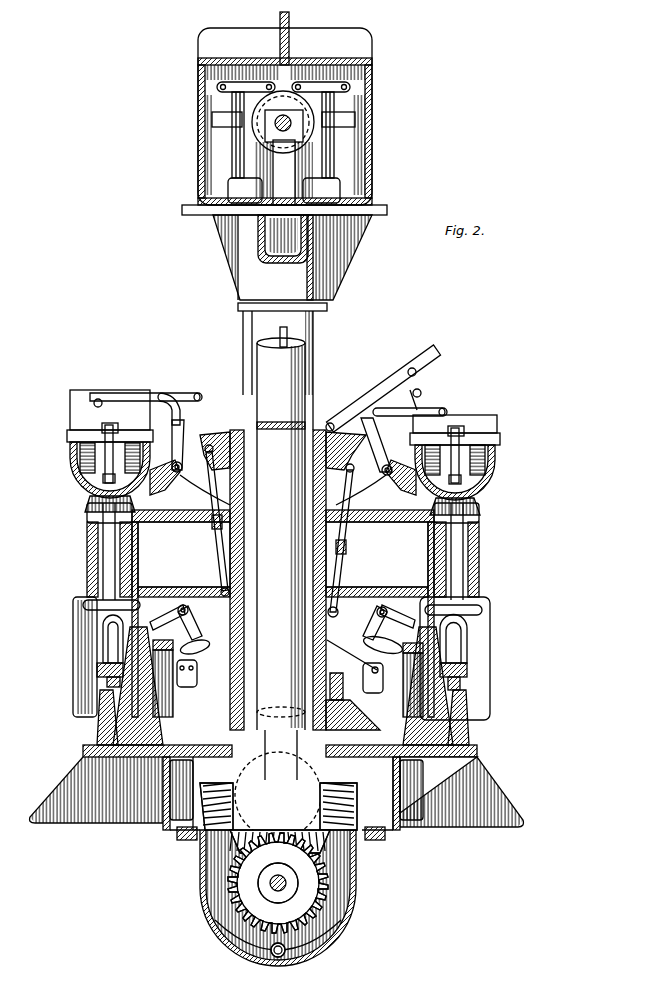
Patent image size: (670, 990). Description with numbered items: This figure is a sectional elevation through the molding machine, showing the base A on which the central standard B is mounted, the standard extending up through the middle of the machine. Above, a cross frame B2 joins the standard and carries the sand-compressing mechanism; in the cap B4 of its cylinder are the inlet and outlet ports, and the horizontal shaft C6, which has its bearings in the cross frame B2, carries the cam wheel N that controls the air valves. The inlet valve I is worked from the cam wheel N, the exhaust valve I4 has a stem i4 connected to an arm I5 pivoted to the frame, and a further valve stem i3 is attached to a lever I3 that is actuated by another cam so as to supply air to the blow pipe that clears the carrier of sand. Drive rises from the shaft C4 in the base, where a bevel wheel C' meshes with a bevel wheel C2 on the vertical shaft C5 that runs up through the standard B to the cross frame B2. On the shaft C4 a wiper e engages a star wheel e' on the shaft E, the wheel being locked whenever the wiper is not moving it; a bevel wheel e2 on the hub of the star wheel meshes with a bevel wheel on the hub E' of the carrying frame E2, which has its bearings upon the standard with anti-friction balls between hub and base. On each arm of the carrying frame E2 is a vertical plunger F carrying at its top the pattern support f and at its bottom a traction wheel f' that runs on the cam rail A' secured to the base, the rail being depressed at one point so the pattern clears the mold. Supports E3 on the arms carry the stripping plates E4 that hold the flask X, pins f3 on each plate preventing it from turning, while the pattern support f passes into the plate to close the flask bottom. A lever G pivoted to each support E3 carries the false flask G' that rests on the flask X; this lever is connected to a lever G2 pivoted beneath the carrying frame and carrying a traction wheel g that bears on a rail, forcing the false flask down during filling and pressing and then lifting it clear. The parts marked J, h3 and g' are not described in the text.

The inlet valve I is at (357, 176).
The arm I5 is at (244, 82).
The lever I3 is at (325, 82).
The cam wheel N is at (255, 132).
The horizontal shaft C6 is at (283, 132).
The stem i4 is at (238, 160).
The stem i3 is at (330, 160).
The exhaust valve I4 is at (245, 190).
The cap B4 is at (321, 190).
The cross frame B2 is at (292, 263).
The vertical shaft C5 is at (282, 340).
The standard B is at (278, 520).
The shaft E is at (283, 587).
The carrying frame E2 is at (283, 554).
The vertical plunger F is at (87, 553).
The side cylinder J is at (269, 658).
The traction wheel f' is at (267, 648).
The cam rail A' is at (259, 717).
The base A is at (277, 855).
The bowl lining h3 is at (278, 933).
The star wheel e' is at (289, 784).
The bevel wheel e2 is at (189, 840).
The bevel wheel C2 is at (325, 848).
The bevel wheel C' is at (289, 883).
The shaft C4 is at (335, 720).
The wiper e is at (265, 944).
The flask X is at (72, 415).
The stripping plate E4 is at (80, 458).
The pins f3 is at (112, 427).
The support E3 is at (140, 487).
The pattern support f is at (288, 502).
The false flask G' is at (261, 381).
The lever bar g' is at (302, 393).
The lever G is at (282, 517).
The lever G2 is at (282, 622).
The traction wheel g is at (288, 670).
The hub E' is at (280, 666).